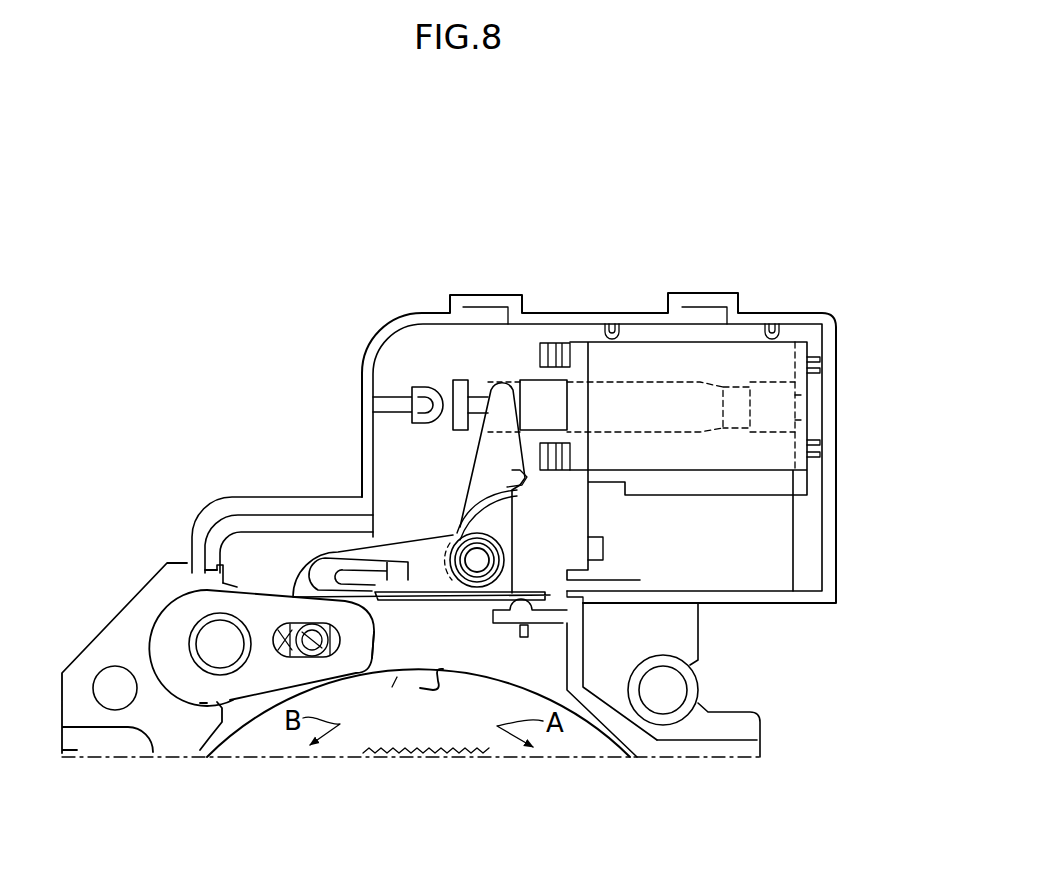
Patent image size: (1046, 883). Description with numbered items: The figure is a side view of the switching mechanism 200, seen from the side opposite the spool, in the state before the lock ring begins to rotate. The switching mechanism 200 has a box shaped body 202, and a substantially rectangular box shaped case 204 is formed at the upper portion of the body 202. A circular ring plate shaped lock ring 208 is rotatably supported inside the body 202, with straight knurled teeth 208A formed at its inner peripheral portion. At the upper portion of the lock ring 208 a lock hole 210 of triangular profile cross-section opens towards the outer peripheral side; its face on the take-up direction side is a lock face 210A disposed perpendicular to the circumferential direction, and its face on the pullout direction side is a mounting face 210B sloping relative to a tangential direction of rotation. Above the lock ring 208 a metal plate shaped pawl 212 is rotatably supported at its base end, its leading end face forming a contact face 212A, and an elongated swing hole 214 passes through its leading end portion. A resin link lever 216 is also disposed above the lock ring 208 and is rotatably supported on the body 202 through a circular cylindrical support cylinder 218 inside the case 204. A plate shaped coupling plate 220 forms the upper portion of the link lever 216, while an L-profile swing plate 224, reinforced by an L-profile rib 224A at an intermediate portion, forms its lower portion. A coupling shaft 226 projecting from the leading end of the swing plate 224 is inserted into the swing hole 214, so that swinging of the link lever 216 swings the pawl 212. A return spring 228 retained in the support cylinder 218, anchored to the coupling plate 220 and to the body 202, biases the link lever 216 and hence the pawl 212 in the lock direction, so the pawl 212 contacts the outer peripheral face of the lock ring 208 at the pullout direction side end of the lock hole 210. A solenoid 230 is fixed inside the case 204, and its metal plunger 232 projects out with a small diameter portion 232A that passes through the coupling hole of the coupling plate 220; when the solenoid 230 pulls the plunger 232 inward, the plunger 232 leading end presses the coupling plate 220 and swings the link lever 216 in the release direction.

The switching mechanism 200 is at (240, 278).
The body 202 is at (703, 650).
The case 204 is at (360, 382).
The lock ring 208 is at (190, 730).
The knurled teeth 208A is at (433, 747).
The lock hole 210 is at (418, 713).
The lock face 210A is at (430, 684).
The mounting face 210B is at (392, 687).
The pawl 212 is at (175, 603).
The contact face 212A is at (370, 652).
The swing hole 214 is at (283, 620).
The link lever 216 is at (407, 537).
The support cylinder 218 is at (503, 543).
The coupling plate 220 is at (470, 468).
The swing plate 224 is at (313, 560).
The rib 224A is at (363, 557).
The coupling shaft 226 is at (313, 650).
The return spring 228 is at (480, 497).
The solenoid 230 is at (645, 341).
The plunger 232 is at (455, 387).
The small diameter portion 232A is at (478, 395).